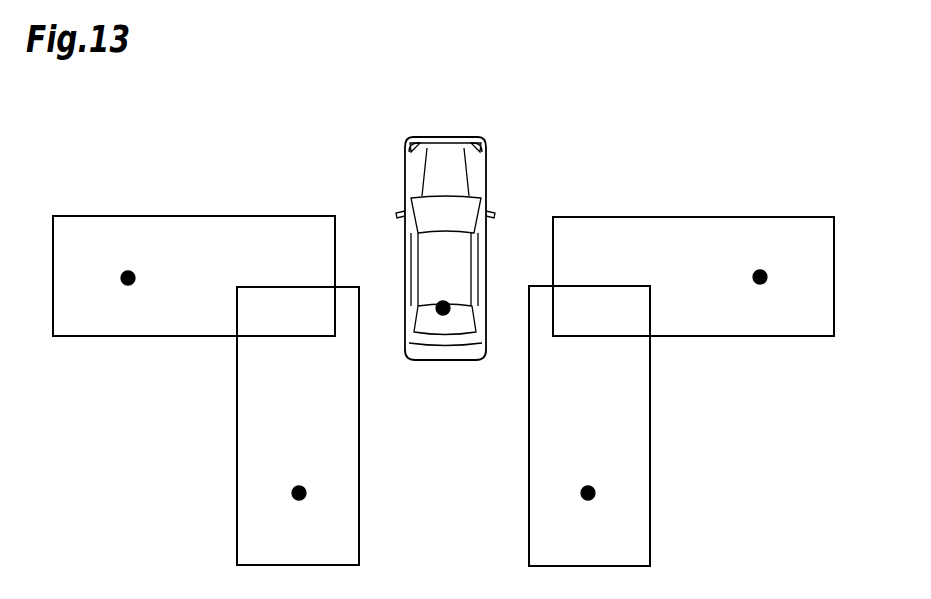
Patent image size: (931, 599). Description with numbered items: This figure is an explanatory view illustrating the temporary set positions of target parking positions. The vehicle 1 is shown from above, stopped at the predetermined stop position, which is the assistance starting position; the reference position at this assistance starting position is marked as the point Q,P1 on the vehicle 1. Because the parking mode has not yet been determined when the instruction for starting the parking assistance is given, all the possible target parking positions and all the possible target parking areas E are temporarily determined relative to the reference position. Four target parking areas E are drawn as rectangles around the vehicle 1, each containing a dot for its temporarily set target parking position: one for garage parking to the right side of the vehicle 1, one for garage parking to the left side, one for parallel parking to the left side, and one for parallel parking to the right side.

The vehicle 1 is at (484, 177).
The target parking area E is at (176, 215).
The reference position at the assistance starting position Q,P1 is at (443, 316).